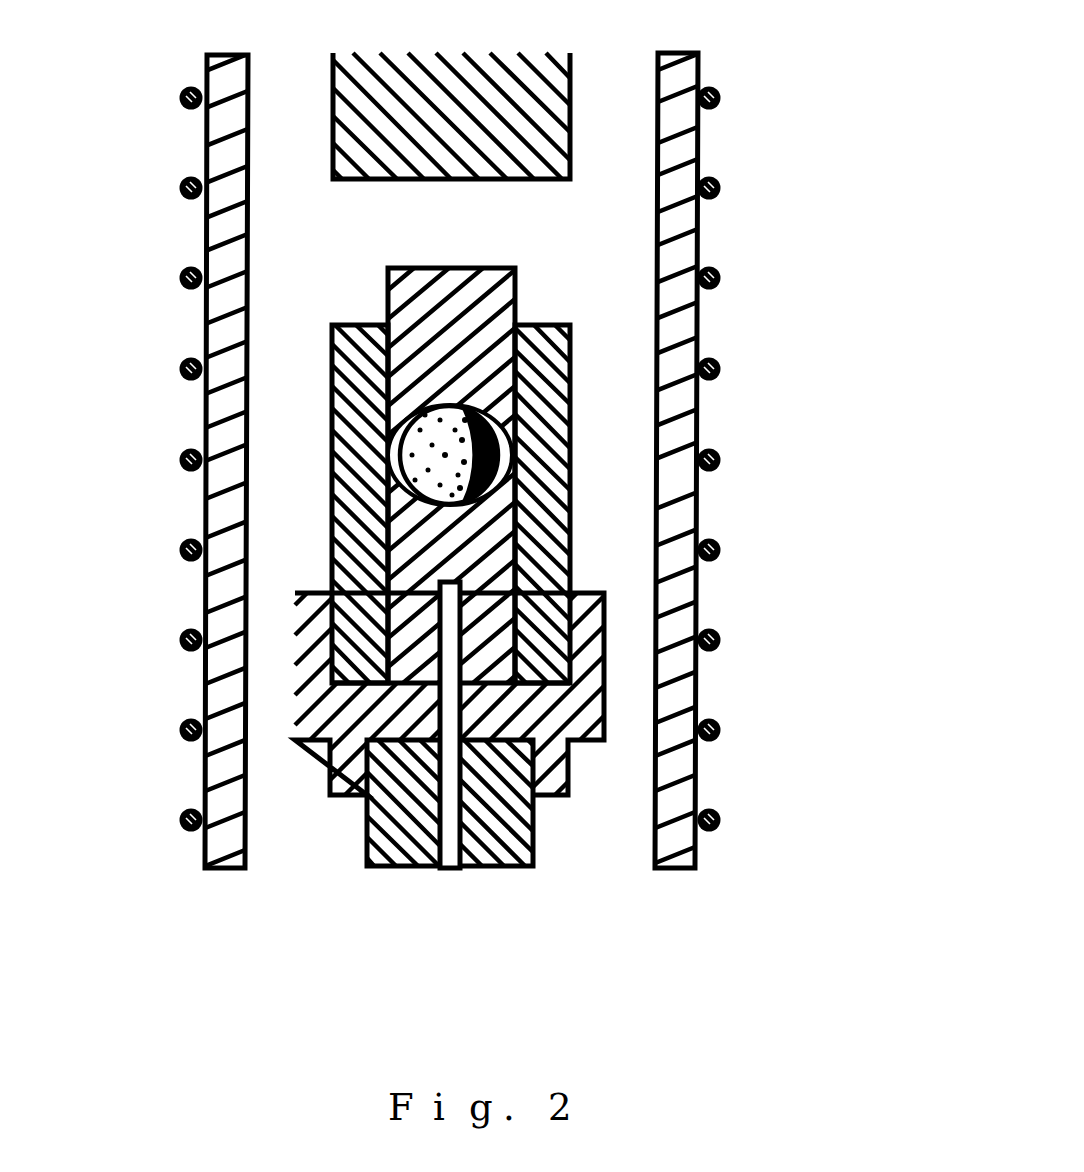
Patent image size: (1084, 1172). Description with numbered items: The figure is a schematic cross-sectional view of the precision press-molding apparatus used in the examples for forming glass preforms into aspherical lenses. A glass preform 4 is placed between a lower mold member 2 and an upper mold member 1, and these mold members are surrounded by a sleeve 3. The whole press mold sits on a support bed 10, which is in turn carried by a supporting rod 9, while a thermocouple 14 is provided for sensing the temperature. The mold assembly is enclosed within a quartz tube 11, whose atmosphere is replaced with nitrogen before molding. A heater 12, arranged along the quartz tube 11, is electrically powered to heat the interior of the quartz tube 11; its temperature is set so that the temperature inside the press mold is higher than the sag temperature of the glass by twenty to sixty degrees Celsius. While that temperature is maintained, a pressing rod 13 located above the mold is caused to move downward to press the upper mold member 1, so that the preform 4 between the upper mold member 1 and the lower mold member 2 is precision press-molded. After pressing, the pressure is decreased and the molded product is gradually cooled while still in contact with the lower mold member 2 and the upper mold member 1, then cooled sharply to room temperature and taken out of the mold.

The upper mold member 1 is at (500, 312).
The lower mold member 2 is at (495, 650).
The sleeve 3 is at (548, 565).
The preform 4 is at (473, 462).
The supporting rod 9 is at (507, 838).
The support bed 10 is at (575, 714).
The quartz tube 11 is at (222, 330).
The heater 12 is at (183, 476).
The pressing rod 13 is at (472, 129).
The thermocouple 14 is at (447, 853).